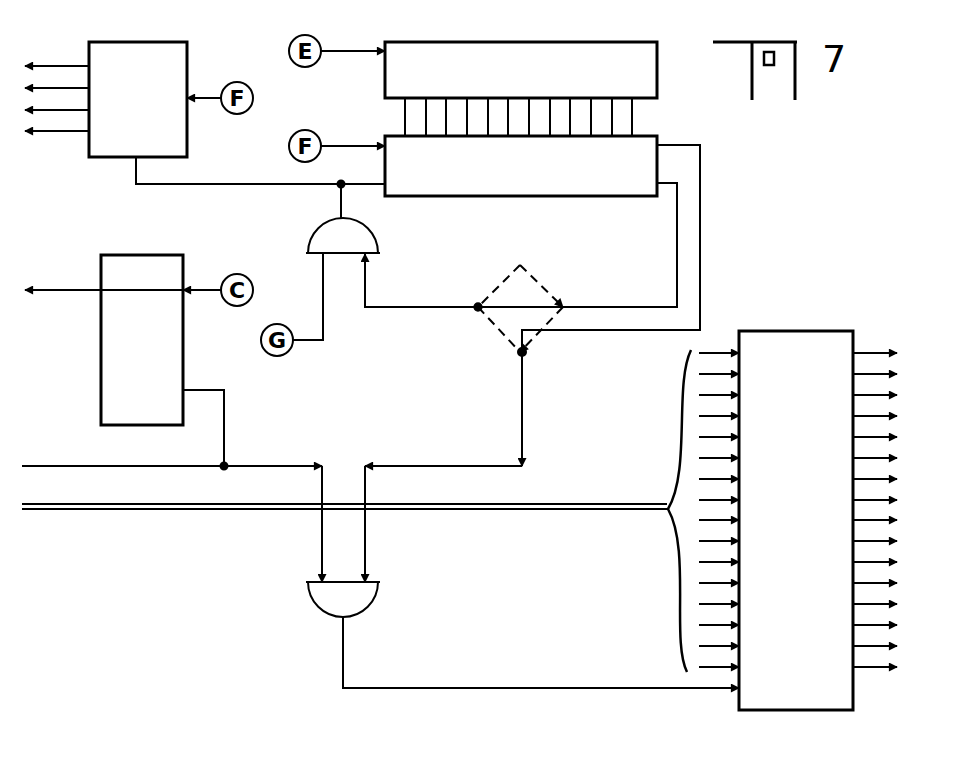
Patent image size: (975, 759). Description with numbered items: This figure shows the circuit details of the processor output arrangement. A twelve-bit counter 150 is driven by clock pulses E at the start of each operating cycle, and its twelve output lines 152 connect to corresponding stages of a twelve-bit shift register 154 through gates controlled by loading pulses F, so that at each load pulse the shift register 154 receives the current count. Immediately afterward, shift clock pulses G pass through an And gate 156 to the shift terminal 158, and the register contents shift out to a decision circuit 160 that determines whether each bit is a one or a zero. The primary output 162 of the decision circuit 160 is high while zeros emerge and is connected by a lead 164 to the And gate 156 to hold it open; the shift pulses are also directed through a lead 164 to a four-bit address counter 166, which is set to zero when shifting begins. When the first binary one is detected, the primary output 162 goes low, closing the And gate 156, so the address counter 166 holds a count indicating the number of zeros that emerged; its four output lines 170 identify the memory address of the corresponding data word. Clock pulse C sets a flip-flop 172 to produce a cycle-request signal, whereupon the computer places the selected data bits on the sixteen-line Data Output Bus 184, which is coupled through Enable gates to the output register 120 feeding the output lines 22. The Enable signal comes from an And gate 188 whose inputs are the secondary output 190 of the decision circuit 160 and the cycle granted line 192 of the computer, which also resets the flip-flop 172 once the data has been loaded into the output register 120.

The output lines 22 is at (873, 350).
The output register 120 is at (786, 330).
The 12-bit counter 150 is at (578, 42).
The output lines of the counter 152 is at (645, 118).
The 12-bit shift register 154 is at (585, 196).
The And gate 156 is at (319, 235).
The shift terminal 158 is at (380, 191).
The decision circuit 160 is at (538, 282).
The primary output 162 is at (477, 305).
The lead 164 is at (193, 186).
The four-bit address counter 166 is at (172, 42).
The output lines of the address counter 170 is at (58, 60).
The flip-flop 172 is at (126, 258).
The Data Output Bus 184 is at (279, 513).
The And gate 188 is at (329, 604).
The secondary output 190 is at (524, 352).
The cycle granted line 192 is at (263, 466).